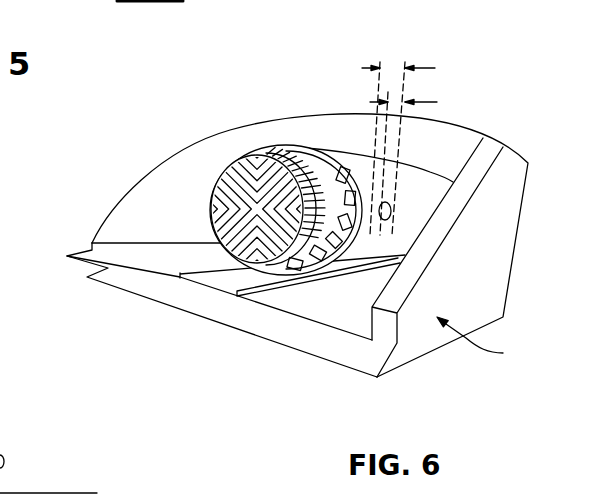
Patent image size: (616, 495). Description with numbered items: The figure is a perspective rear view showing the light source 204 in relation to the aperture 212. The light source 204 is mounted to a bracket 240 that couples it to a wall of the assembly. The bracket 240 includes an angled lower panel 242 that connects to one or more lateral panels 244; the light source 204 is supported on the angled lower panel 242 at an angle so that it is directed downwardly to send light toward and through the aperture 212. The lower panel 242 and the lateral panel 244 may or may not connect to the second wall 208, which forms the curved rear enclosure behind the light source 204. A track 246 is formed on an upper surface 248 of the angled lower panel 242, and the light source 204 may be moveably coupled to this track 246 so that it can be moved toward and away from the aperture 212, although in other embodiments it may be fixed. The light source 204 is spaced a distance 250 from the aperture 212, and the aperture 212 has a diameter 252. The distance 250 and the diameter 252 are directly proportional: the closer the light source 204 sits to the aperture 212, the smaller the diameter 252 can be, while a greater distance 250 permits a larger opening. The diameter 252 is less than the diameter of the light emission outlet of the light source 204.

The light source 204 is at (285, 151).
The second wall 208 is at (472, 133).
The aperture 212 is at (392, 211).
The bracket 240 is at (497, 343).
The angled lower panel 242 is at (296, 334).
The lateral panel 244 is at (485, 258).
The track 246 is at (227, 282).
The upper surface 248 is at (160, 263).
The distance 250 is at (426, 71).
The diameter 252 is at (428, 101).